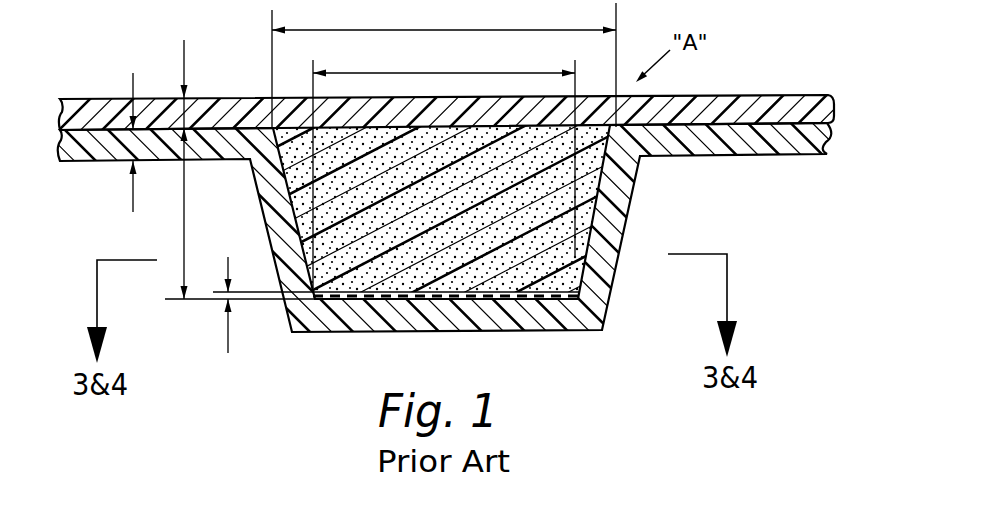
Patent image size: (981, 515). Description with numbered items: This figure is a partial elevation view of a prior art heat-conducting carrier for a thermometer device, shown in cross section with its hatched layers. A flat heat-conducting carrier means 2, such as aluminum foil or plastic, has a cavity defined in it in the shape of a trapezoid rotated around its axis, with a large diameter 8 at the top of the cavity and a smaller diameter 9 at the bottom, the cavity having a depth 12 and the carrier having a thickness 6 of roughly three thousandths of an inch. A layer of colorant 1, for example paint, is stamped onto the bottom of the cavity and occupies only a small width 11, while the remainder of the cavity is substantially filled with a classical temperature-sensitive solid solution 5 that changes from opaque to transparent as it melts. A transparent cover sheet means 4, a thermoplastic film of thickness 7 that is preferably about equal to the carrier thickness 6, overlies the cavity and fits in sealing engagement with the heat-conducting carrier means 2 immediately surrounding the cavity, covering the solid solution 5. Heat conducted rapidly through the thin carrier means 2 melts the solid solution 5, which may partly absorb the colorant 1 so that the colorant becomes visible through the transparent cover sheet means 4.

The colorant 1 is at (372, 331).
The heat-conducting carrier means 2 is at (740, 148).
The transparent cover sheet means 4 is at (756, 98).
The solid solution 5 is at (512, 292).
The thickness of heat-conducting carrier means 6 is at (133, 196).
The thickness of transparent film 7 is at (184, 47).
The large diameter at top of cavity 8 is at (436, 30).
The smaller diameter at bottom of cavity 9 is at (358, 73).
The width of colorant 11 is at (228, 335).
The depth of cavity 12 is at (184, 216).